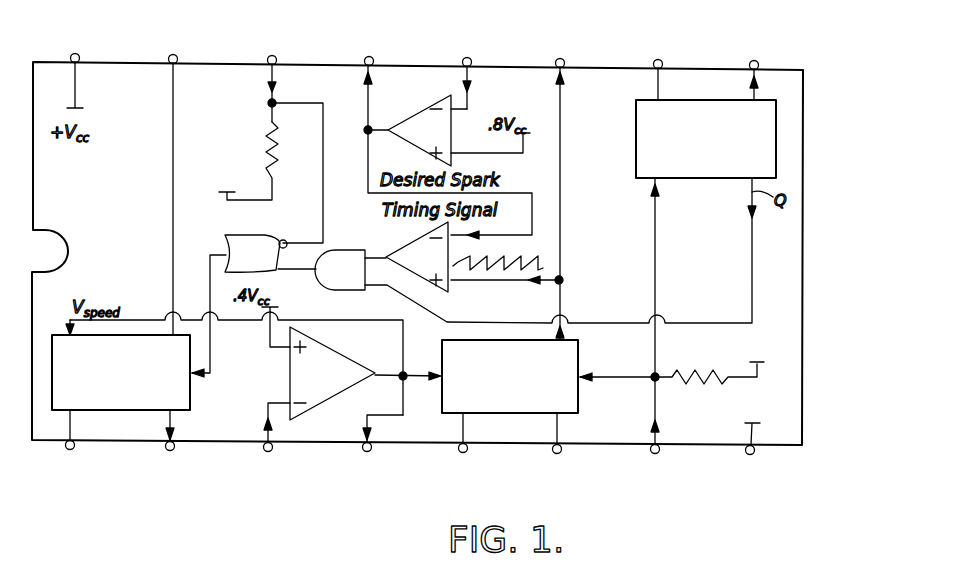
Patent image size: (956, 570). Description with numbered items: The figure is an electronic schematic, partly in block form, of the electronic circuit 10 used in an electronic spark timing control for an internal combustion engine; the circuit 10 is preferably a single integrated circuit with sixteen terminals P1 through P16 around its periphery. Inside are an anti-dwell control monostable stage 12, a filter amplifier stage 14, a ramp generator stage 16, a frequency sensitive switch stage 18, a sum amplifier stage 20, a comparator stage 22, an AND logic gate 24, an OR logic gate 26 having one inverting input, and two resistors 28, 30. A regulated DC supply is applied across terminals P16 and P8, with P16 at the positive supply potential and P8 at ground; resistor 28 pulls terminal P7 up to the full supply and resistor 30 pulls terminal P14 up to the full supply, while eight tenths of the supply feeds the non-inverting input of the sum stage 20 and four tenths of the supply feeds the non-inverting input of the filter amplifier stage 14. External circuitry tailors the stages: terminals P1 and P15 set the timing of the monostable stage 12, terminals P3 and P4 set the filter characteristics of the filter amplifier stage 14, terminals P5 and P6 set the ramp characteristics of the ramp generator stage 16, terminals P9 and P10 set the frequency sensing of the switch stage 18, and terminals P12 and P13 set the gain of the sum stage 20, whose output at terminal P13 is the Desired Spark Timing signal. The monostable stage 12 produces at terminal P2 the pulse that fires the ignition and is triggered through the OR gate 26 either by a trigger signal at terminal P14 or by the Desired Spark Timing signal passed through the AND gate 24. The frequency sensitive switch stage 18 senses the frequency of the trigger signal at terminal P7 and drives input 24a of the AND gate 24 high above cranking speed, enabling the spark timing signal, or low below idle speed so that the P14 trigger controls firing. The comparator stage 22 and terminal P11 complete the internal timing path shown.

The electronic circuit 10 is at (810, 99).
The anti-dwell control monostable stage 12 is at (190, 391).
The filter amplifier stage 14 is at (336, 362).
The ramp generator stage 16 is at (580, 352).
The frequency sensitive switch stage 18 is at (636, 152).
The sum amplifier stage 20 is at (427, 108).
The comparator stage 22 is at (448, 292).
The AND logic gate 24 is at (345, 250).
The input of AND gate 24a is at (375, 290).
The OR logic gate 26 is at (240, 235).
The resistor 28 is at (690, 381).
The resistor 30 is at (268, 136).
The terminal P1 is at (68, 450).
The terminal P2 is at (168, 451).
The terminal P3 is at (266, 452).
The terminal P4 is at (365, 452).
The terminal P5 is at (461, 453).
The terminal P6 is at (555, 454).
The terminal P7 is at (653, 454).
The terminal P8 is at (748, 455).
The terminal P9 is at (757, 59).
The terminal P10 is at (661, 58).
The terminal P11 is at (563, 57).
The terminal P12 is at (470, 56).
The terminal P13 is at (372, 55).
The terminal P14 is at (275, 54).
The terminal P15 is at (176, 53).
The terminal P16 is at (78, 52).